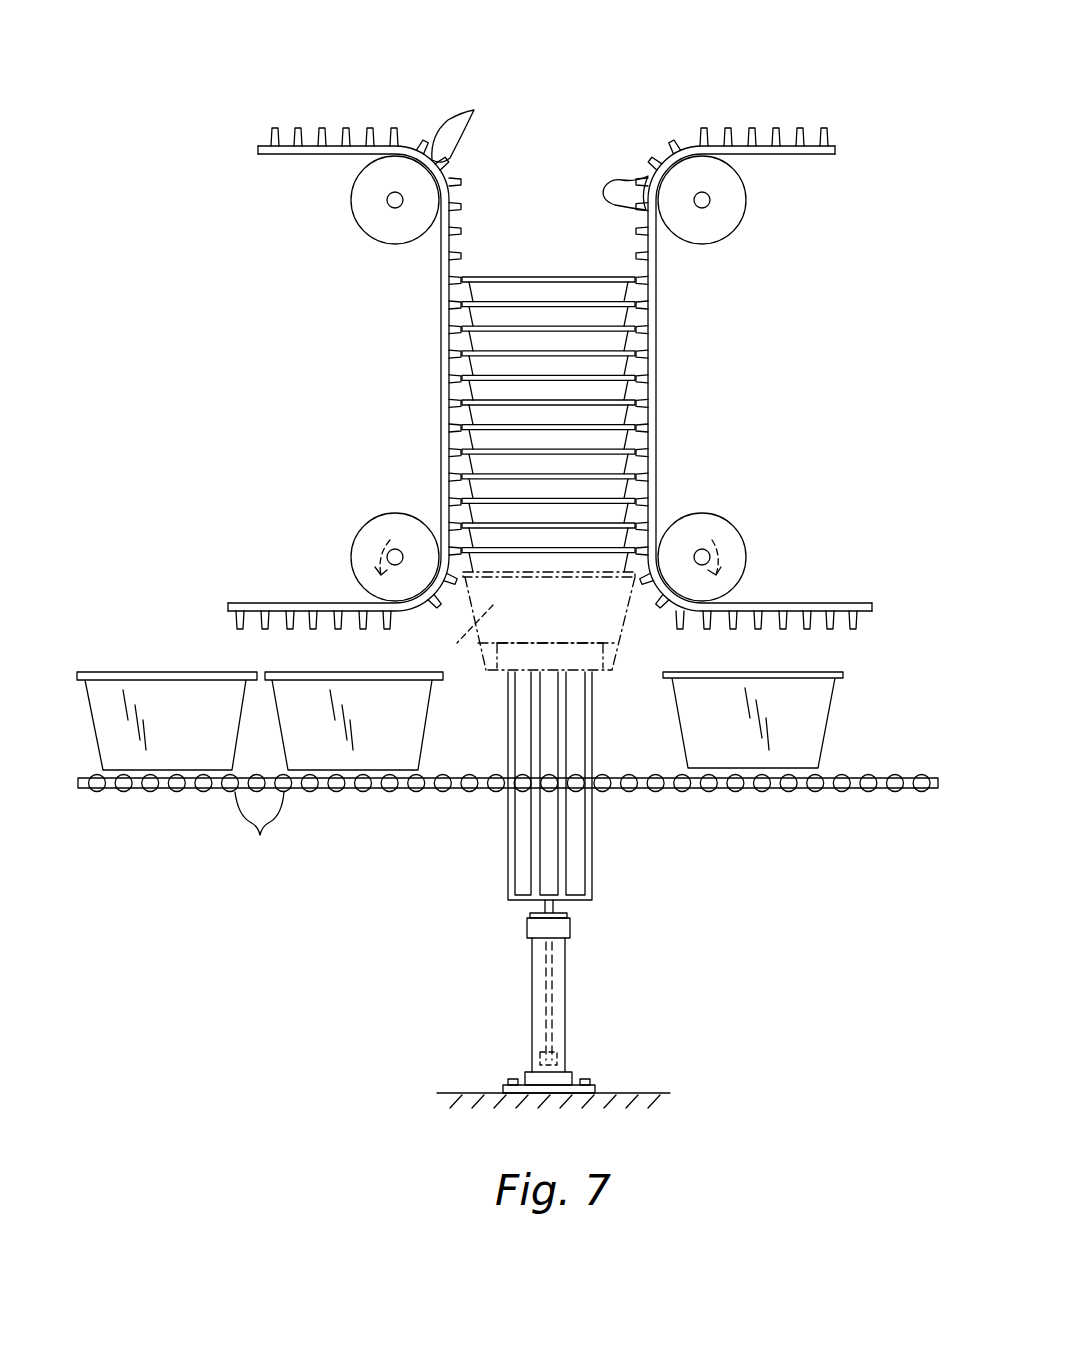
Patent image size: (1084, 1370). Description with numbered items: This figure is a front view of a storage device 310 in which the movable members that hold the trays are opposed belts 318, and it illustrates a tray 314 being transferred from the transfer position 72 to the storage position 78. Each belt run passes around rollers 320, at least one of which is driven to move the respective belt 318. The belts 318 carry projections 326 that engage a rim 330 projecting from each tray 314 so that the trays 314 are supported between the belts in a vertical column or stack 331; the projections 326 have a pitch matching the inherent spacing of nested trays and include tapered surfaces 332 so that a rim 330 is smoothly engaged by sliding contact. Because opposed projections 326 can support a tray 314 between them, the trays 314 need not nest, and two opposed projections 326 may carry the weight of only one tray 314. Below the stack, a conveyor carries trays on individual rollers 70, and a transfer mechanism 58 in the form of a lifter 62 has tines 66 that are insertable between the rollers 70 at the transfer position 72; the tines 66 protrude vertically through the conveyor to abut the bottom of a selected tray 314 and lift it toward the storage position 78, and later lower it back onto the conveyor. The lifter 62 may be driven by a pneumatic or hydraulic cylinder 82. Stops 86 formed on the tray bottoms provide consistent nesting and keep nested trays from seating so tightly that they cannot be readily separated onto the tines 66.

The storage device 310 is at (634, 70).
The belts 318 is at (278, 158).
The roller 320 is at (398, 232).
The tapered surfaces 332 is at (315, 138).
The projections 326 is at (474, 110).
The stack 331 is at (599, 255).
The tray 314 is at (468, 632).
The stops 86 is at (522, 657).
The storage position 78 is at (632, 615).
The rim 330 is at (840, 688).
The rollers 70 is at (259, 833).
The transfer position 72 is at (600, 757).
The tines 66 is at (588, 848).
The lifter 62 is at (510, 905).
The hydraulic cylinder 82 is at (560, 1020).
The transfer mechanism 58 is at (656, 976).